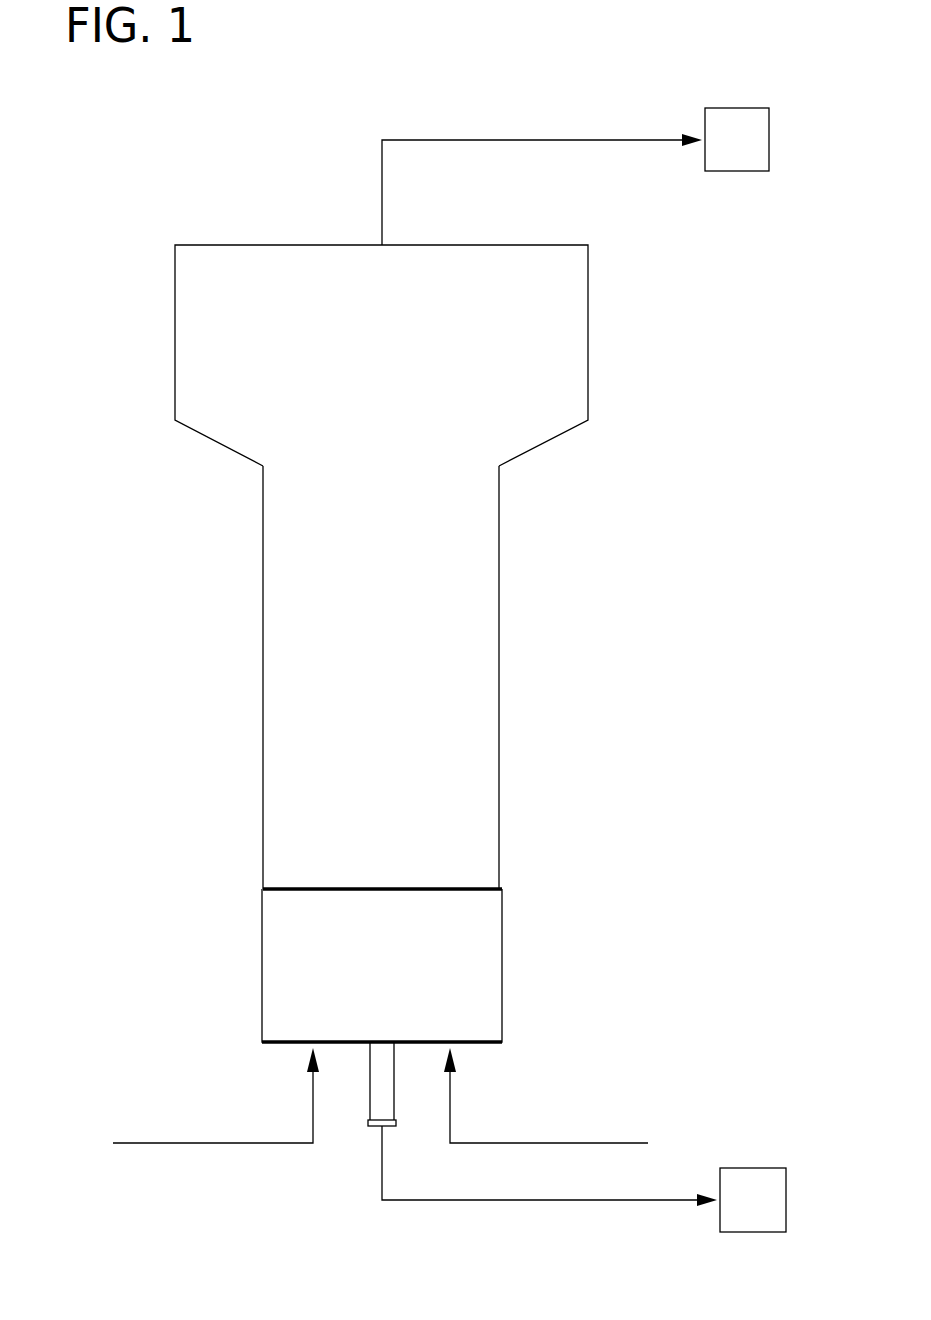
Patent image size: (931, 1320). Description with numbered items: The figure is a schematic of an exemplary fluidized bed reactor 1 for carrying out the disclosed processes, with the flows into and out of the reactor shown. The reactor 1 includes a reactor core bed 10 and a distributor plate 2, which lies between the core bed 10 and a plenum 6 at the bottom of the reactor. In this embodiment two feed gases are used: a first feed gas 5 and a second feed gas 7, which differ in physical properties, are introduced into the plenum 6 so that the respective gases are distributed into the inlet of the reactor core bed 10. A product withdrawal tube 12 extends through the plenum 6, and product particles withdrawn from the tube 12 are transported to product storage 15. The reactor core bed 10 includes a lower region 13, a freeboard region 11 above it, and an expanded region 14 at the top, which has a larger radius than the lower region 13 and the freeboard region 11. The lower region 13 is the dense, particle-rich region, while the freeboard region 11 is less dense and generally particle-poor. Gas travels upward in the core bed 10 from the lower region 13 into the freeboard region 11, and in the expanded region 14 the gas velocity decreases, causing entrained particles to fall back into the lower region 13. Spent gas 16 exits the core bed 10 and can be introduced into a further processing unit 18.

The fluidized bed reactor 1 is at (126, 184).
The distributor plate 2 is at (502, 890).
The first feed gas 5 is at (173, 1143).
The plenum 6 is at (515, 953).
The second feed gas 7 is at (548, 1143).
The reactor core bed 10 is at (458, 631).
The freeboard region 11 is at (499, 551).
The product withdrawal tube 12 is at (375, 1108).
The lower region 13 is at (499, 765).
The expanded region 14 is at (588, 332).
The product storage 15 is at (753, 1200).
The spent gas 16 is at (547, 138).
The further processing unit 18 is at (737, 139).